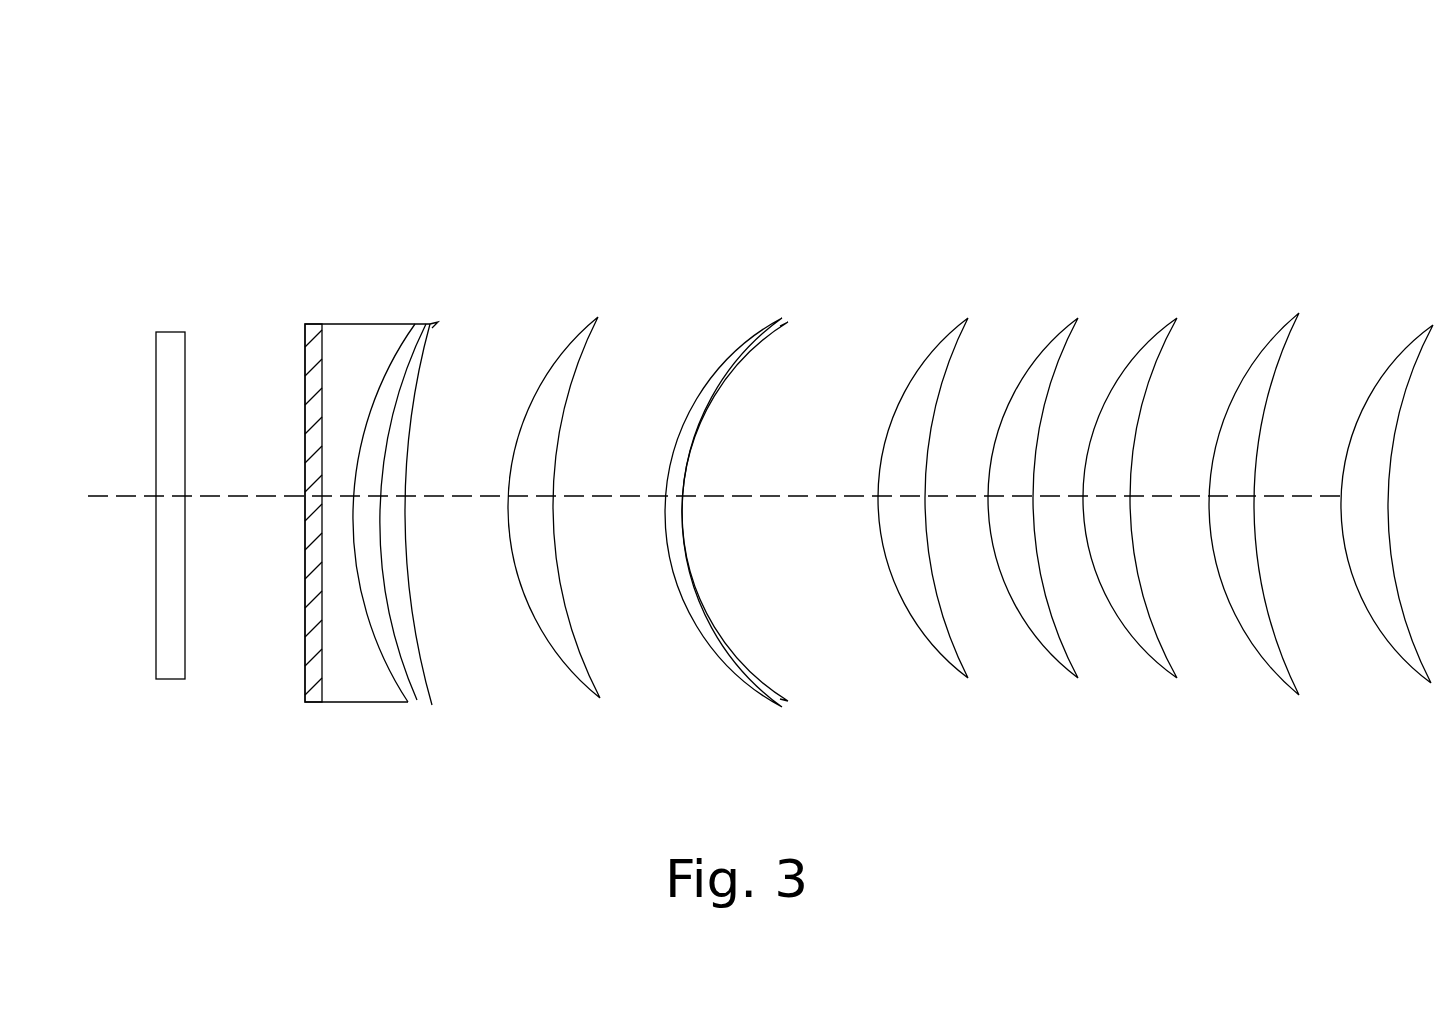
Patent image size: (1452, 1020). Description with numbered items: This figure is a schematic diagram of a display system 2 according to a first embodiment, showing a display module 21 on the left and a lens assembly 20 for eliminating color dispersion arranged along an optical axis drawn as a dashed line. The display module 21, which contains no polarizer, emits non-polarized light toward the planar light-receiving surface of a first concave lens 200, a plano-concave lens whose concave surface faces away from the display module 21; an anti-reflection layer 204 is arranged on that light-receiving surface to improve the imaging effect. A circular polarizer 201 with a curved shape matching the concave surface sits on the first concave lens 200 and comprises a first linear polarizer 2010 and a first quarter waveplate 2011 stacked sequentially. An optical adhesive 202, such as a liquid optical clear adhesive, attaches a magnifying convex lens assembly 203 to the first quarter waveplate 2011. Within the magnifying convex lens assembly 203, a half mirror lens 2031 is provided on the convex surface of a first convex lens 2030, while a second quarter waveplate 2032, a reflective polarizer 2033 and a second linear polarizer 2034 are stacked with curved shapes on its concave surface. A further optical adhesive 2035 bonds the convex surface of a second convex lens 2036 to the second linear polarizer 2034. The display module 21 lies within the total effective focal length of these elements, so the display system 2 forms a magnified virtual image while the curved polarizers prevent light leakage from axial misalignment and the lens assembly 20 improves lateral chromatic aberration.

The display system 2 is at (1247, 813).
The lens assembly 20 is at (1427, 122).
The display module 21 is at (181, 343).
The first concave lens 200 is at (352, 690).
The circular polarizer 201 is at (293, 228).
The first linear polarizer 2010 is at (390, 360).
The first quarter waveplate 2011 is at (420, 332).
The optical adhesive 202 is at (568, 342).
The magnifying convex lens assembly 203 is at (1450, 223).
The first convex lens 2030 is at (767, 337).
The half mirror lens 2031 is at (715, 353).
The second quarter waveplate 2032 is at (928, 353).
The reflective polarizer 2033 is at (1050, 343).
The second linear polarizer 2034 is at (1150, 343).
The optical adhesive 2035 is at (1271, 345).
The second convex lens 2036 is at (1408, 350).
The anti-reflection layer 204 is at (308, 340).